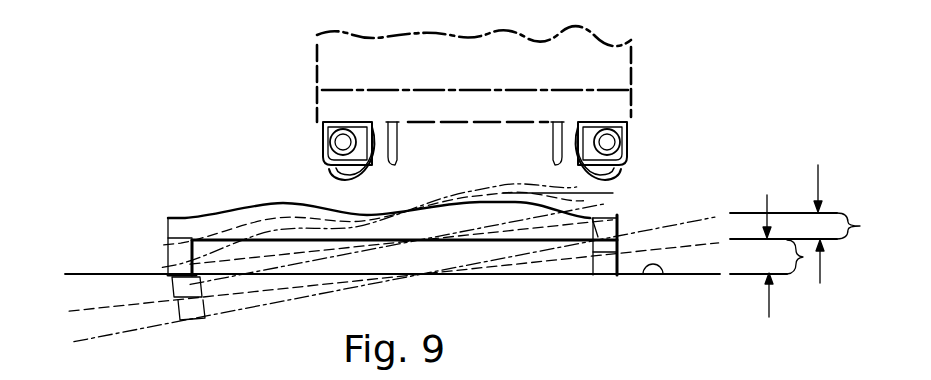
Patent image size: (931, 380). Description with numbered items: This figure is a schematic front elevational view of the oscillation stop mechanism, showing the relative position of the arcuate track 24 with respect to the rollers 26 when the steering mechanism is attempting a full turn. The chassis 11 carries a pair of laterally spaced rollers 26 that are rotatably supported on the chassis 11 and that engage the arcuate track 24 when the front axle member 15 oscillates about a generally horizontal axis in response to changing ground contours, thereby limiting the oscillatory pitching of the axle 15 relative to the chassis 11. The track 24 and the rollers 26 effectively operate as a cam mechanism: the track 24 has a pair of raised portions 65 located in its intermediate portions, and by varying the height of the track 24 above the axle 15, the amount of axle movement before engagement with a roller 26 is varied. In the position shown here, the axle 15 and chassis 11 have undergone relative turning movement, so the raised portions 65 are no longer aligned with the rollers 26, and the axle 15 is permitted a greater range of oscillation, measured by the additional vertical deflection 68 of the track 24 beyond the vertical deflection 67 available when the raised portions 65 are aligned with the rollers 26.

The chassis 11 is at (632, 89).
The rollers 26 is at (332, 172).
The raised portions 65 is at (287, 203).
The arcuate track 24 is at (168, 235).
The front axle member 15 is at (643, 274).
The vertical deflection 67 is at (803, 257).
The additional vertical deflection 68 is at (808, 224).